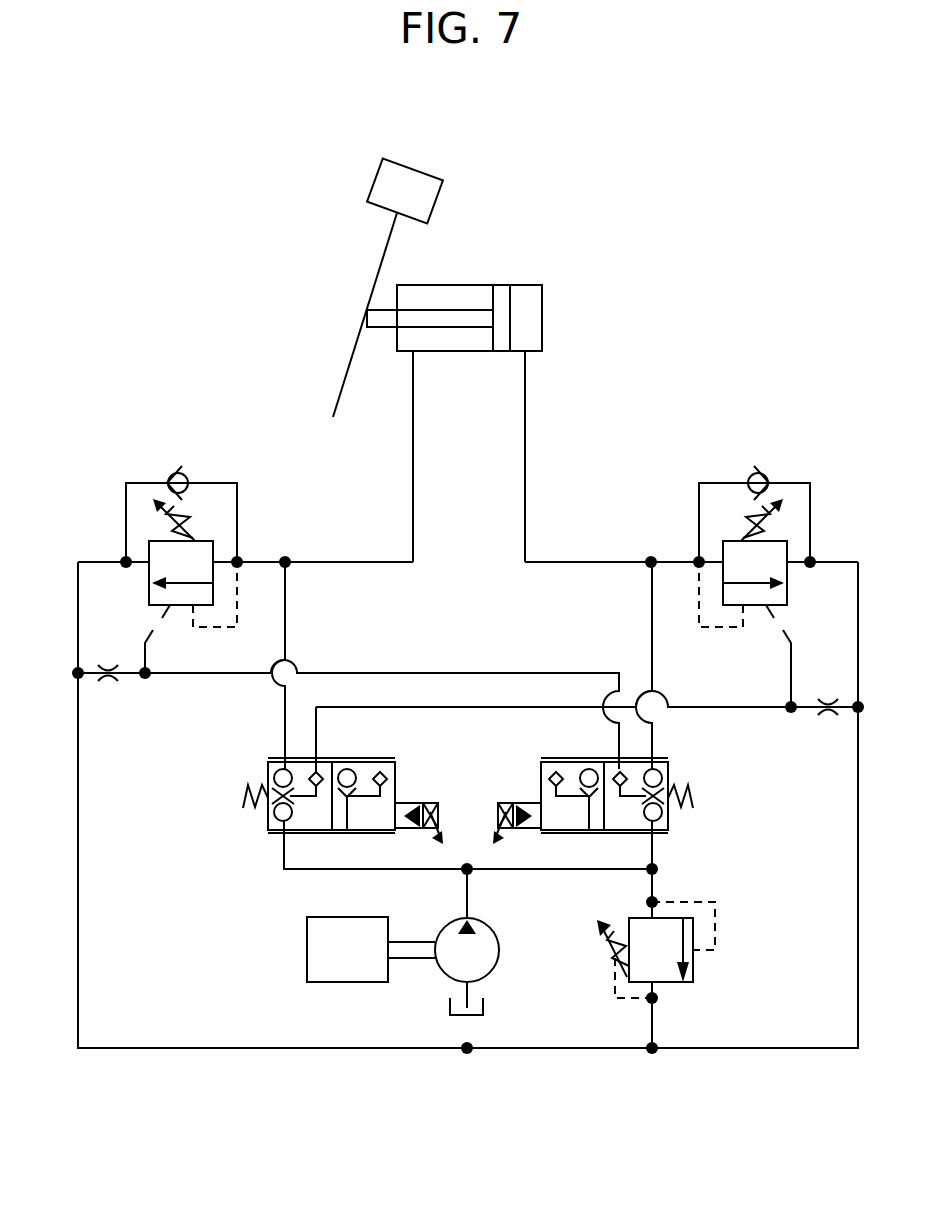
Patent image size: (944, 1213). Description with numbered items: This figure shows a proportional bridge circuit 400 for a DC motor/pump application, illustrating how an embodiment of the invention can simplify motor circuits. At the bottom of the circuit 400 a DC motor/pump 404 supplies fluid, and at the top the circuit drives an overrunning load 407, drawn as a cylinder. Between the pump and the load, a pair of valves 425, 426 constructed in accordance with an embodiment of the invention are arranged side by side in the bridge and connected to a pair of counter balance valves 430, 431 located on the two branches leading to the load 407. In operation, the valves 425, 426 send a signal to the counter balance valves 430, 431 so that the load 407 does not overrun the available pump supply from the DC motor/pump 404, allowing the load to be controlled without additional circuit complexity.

The circuit 400 is at (203, 261).
The overrunning load 407 is at (504, 255).
The counter balance valve 430 is at (148, 550).
The counter balance valve 431 is at (790, 550).
The valve 425 is at (268, 822).
The valve 426 is at (668, 822).
The DC motor/pump 404 is at (288, 947).